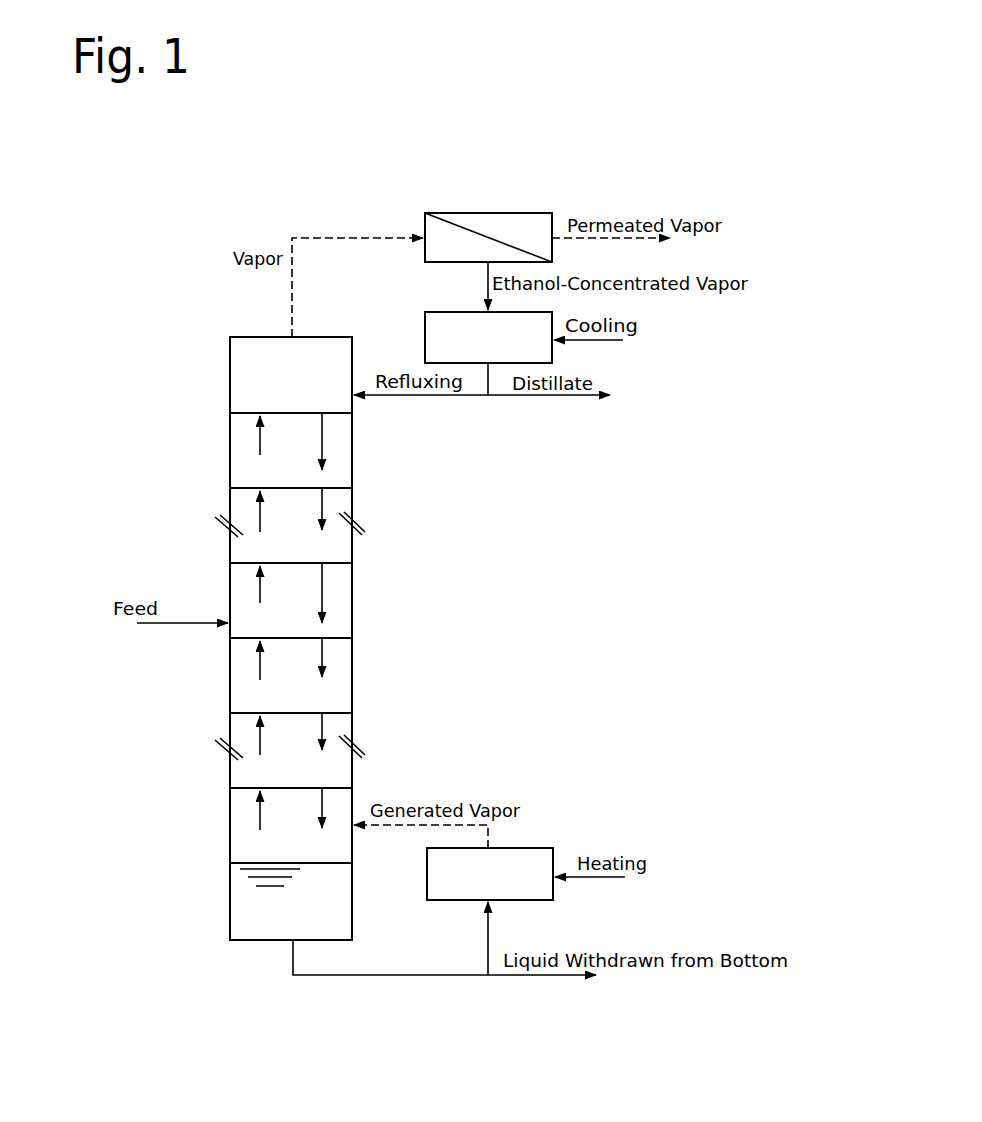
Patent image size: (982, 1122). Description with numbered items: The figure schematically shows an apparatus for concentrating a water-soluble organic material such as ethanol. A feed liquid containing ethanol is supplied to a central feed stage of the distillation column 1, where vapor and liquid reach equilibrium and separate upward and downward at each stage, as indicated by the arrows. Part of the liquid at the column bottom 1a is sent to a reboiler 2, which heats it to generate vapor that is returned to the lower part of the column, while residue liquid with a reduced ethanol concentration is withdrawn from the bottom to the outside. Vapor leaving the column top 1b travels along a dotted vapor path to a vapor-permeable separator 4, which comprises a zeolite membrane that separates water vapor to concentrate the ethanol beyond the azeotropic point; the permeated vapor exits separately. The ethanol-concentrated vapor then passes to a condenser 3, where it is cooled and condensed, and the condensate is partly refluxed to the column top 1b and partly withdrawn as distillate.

The distillation column 1 is at (352, 592).
The column bottom 1a is at (245, 940).
The column top 1b is at (230, 376).
The reboiler 2 is at (540, 848).
The condenser 3 is at (425, 338).
The vapor-permeable separator 4 is at (425, 232).